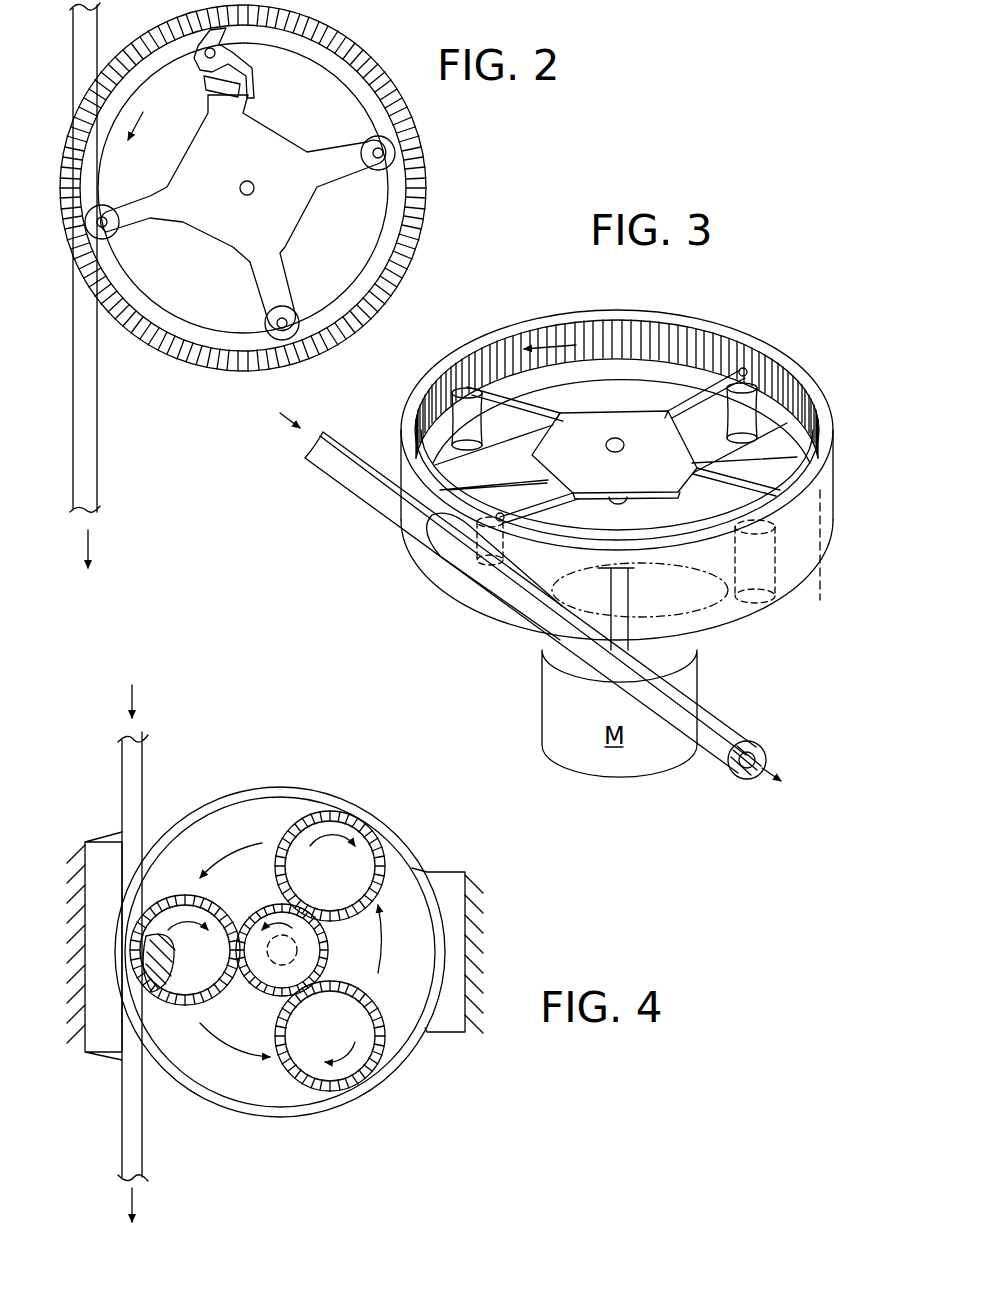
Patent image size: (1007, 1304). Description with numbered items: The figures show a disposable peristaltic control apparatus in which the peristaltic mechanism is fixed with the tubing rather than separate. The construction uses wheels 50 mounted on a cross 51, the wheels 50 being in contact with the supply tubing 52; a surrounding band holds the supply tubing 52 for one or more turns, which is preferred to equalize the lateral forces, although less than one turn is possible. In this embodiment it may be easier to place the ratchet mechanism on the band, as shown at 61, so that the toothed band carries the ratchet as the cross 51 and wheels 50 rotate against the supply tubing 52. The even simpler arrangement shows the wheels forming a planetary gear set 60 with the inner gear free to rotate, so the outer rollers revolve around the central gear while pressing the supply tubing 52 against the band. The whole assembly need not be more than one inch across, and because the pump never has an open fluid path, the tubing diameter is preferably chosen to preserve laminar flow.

In FIG. 2, the wheels 50 is at (357, 222).
In FIG. 3, the wheels 50 is at (748, 410).
In FIG. 2, the cross 51 is at (276, 166).
In FIG. 3, the cross 51 is at (669, 472).
In FIG. 2, the supply tubing 52 is at (98, 412).
In FIG. 3, the supply tubing 52 is at (372, 512).
In FIG. 4, the supply tubing 52 is at (137, 790).
In FIG. 4, the planetary gear set 60 is at (241, 1125).
In FIG. 2, the ratchet mechanism 61 is at (427, 191).
In FIG. 3, the ratchet mechanism 61 is at (826, 481).
In FIG. 4, the ratchet mechanism 61 is at (310, 796).